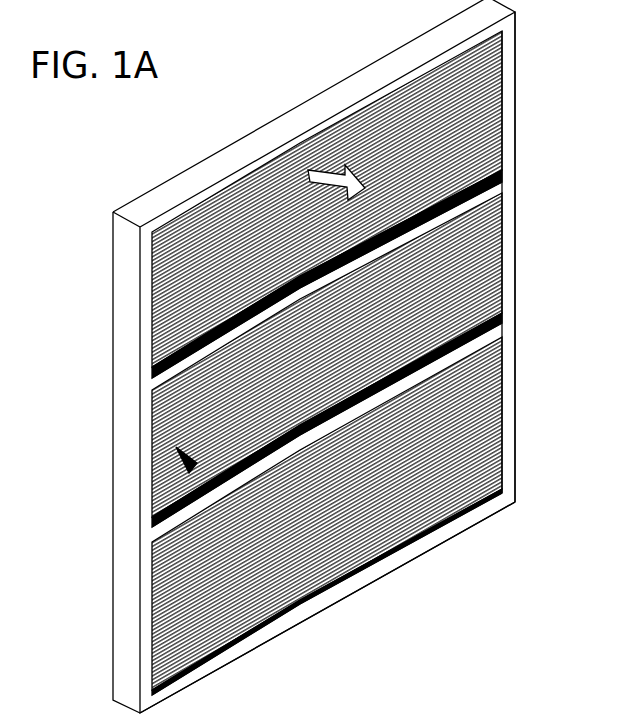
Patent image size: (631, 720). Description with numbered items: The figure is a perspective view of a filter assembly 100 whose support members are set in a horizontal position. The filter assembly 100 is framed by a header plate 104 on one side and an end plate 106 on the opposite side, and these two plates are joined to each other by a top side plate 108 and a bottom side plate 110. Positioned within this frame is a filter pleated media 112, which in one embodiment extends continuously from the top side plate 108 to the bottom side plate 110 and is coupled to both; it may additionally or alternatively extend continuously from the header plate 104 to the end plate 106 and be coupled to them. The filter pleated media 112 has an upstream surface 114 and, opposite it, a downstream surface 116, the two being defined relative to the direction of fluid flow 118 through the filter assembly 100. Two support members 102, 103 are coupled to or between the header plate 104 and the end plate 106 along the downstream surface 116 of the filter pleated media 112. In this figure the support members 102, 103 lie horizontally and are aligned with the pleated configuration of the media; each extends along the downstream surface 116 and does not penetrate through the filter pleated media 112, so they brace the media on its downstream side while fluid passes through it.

The filter assembly 100 is at (258, 66).
The support member 102 is at (503, 167).
The support member 103 is at (502, 325).
The header plate 104 is at (128, 300).
The end plate 106 is at (512, 97).
The top side plate 108 is at (363, 78).
The bottom side plate 110 is at (448, 522).
The filter pleated media 112 is at (485, 398).
The upstream surface 114 is at (150, 440).
The downstream surface 116 is at (290, 592).
The direction of fluid flow 118 is at (307, 173).